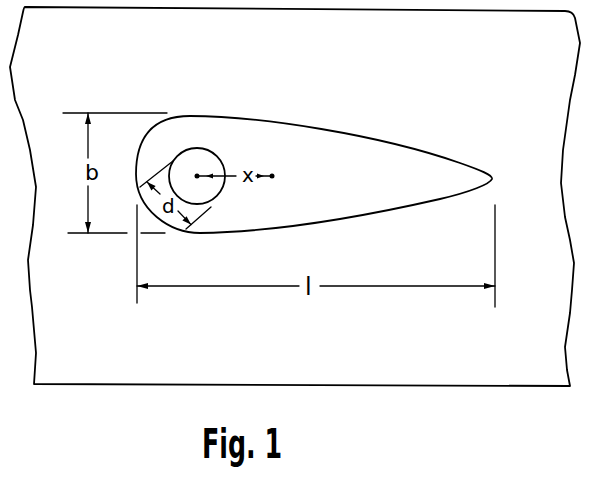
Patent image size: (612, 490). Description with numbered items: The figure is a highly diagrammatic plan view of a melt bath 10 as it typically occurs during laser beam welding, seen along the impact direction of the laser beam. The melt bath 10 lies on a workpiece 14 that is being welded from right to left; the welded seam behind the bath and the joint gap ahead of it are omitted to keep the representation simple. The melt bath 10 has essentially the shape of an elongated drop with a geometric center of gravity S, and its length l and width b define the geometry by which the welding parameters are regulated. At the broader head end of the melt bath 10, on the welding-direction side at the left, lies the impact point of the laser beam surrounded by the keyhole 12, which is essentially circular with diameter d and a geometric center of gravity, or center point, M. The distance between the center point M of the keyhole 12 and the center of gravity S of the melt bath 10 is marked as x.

The melt bath 10 is at (420, 153).
The keyhole 12 is at (218, 156).
The workpiece 14 is at (515, 377).
The geometric center of gravity of keyhole M is at (197, 176).
The geometric center of gravity of melt bath S is at (275, 176).